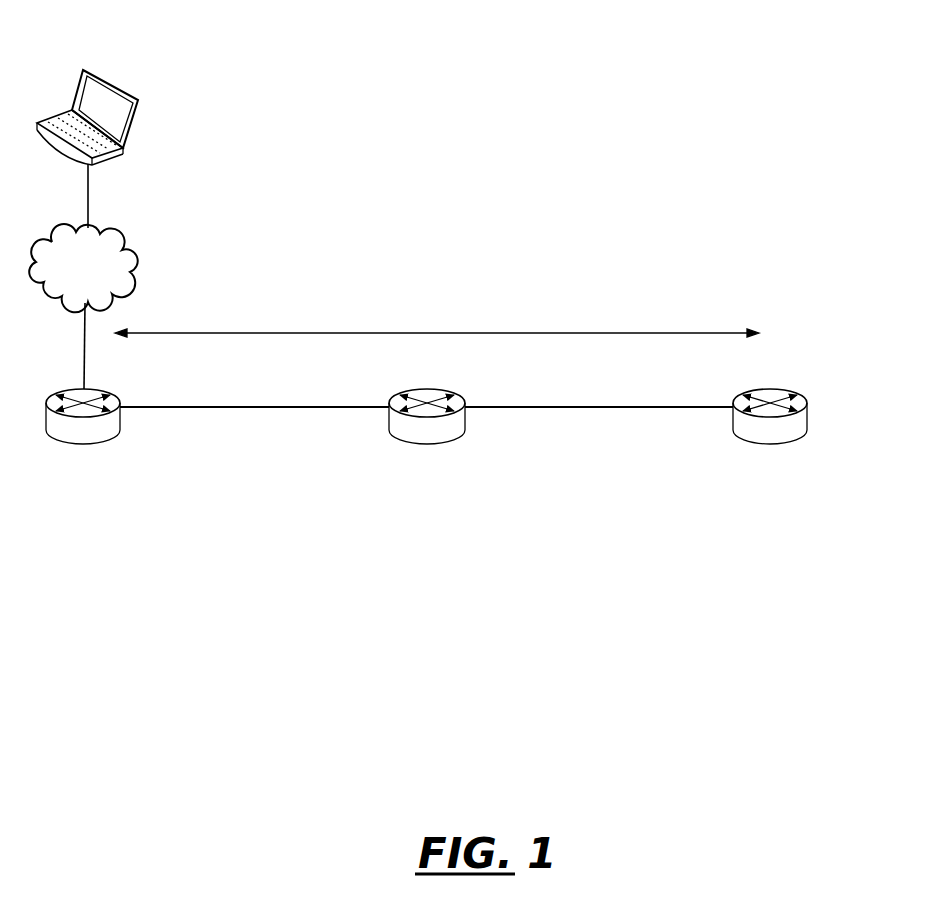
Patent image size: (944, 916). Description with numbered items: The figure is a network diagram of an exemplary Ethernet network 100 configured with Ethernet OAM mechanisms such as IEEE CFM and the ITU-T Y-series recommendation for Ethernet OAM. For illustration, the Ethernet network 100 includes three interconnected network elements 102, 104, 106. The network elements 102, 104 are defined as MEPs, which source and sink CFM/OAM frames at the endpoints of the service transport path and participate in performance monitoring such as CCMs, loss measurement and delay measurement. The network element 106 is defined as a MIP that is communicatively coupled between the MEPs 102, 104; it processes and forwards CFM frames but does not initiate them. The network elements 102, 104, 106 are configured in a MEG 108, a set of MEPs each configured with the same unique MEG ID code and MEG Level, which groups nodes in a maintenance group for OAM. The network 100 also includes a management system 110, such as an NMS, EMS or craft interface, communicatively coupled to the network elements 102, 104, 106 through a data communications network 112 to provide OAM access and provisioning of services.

The Ethernet network 100 is at (490, 89).
The network element 102 is at (73, 494).
The network element 104 is at (769, 491).
The network element 106 is at (428, 493).
The Maintenance Entity Group (MEG) 108 is at (447, 294).
The management system 110 is at (121, 64).
The data communications network 112 is at (134, 268).